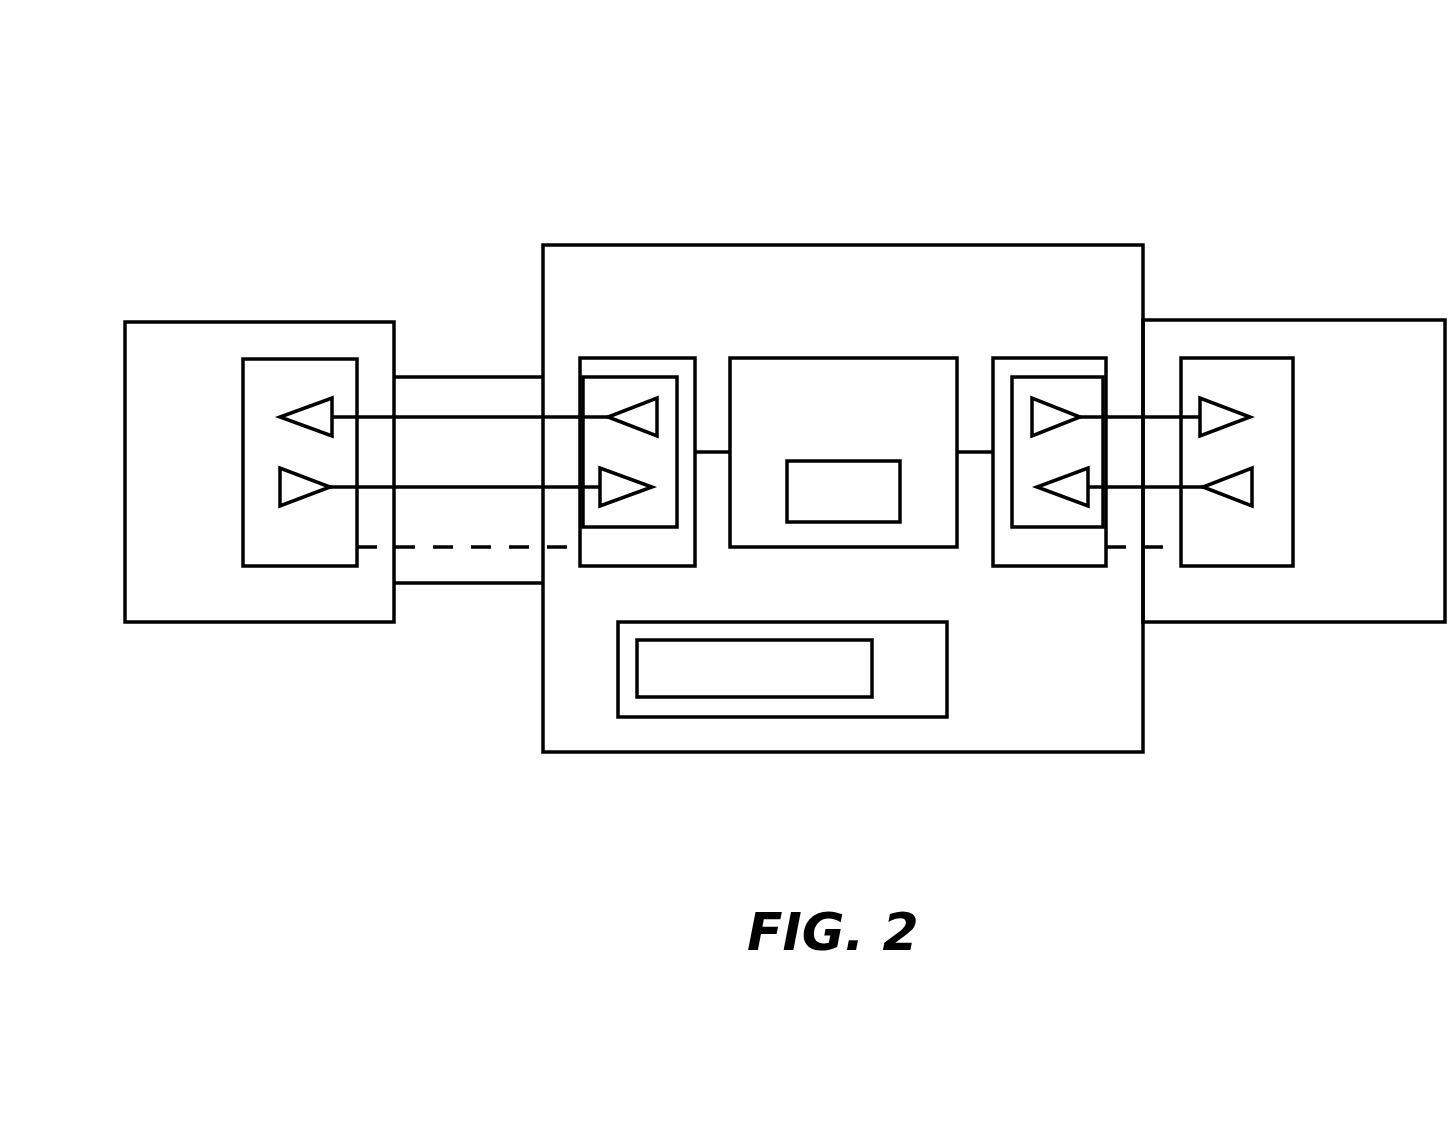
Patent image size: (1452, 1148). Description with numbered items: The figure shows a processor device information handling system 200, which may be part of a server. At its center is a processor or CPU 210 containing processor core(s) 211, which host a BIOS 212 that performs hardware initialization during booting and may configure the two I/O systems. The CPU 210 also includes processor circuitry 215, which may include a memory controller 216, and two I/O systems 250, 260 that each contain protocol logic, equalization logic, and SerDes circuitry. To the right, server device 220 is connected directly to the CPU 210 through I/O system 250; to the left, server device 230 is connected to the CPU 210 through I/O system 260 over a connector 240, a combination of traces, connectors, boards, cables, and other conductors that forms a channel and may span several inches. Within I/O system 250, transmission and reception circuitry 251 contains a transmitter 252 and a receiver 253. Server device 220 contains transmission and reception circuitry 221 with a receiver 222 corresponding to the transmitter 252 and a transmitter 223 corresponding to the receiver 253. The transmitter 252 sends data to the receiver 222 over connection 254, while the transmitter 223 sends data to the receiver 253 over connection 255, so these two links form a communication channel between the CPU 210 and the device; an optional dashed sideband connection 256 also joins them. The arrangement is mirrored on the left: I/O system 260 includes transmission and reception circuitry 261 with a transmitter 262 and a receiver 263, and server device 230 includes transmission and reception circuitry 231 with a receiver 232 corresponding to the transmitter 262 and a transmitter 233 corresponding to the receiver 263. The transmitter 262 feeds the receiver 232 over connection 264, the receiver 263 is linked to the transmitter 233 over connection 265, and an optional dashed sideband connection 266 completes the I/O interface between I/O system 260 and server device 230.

The information handling system 200 is at (292, 97).
The processor 210 is at (843, 430).
The processor core 211 is at (843, 452).
The BIOS 212 is at (843, 491).
The processor circuitry 215 is at (825, 669).
The memory controller 216 is at (754, 668).
The server device 220 is at (1294, 532).
The transmission and reception circuitry 221 is at (1283, 480).
The receiver 222 is at (1292, 395).
The transmitter 223 is at (1299, 474).
The server device 230 is at (259, 502).
The transmission and reception circuitry 231 is at (247, 462).
The receiver 232 is at (240, 397).
The transmitter 233 is at (236, 474).
The connector 240 is at (421, 408).
The I/O system 250 is at (996, 475).
The transmission and reception circuitry 251 is at (994, 414).
The transmitter 252 is at (1020, 353).
The receiver 253 is at (1032, 545).
The connection 254 is at (1126, 344).
The connection 255 is at (1105, 610).
The sideband connection 256 is at (1112, 565).
The I/O system 260 is at (684, 422).
The transmission and reception circuitry 261 is at (674, 484).
The transmitter 262 is at (655, 345).
The receiver 263 is at (642, 541).
The connection 264 is at (470, 340).
The connection 265 is at (465, 592).
The sideband connection 266 is at (462, 596).